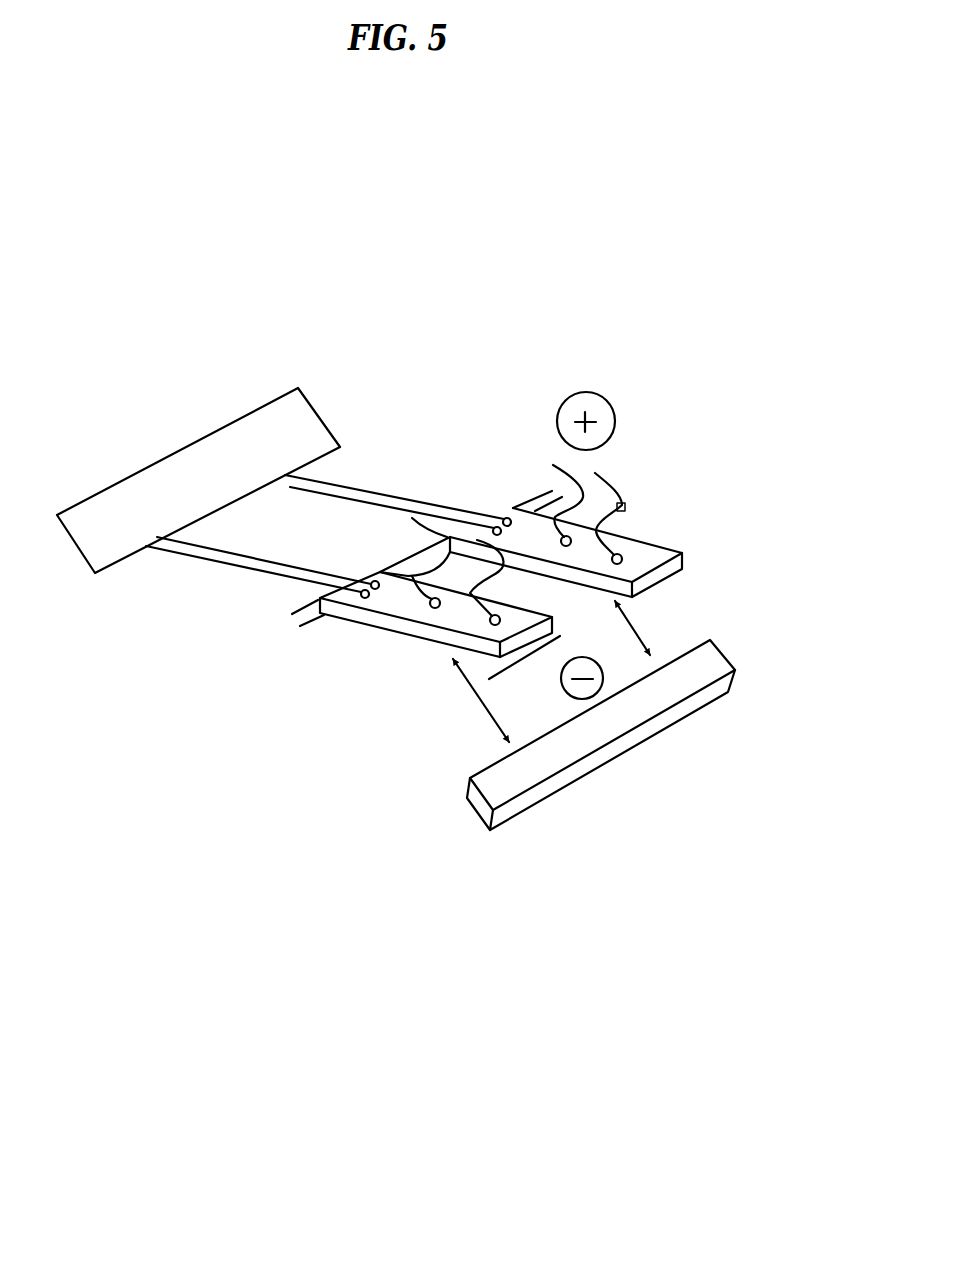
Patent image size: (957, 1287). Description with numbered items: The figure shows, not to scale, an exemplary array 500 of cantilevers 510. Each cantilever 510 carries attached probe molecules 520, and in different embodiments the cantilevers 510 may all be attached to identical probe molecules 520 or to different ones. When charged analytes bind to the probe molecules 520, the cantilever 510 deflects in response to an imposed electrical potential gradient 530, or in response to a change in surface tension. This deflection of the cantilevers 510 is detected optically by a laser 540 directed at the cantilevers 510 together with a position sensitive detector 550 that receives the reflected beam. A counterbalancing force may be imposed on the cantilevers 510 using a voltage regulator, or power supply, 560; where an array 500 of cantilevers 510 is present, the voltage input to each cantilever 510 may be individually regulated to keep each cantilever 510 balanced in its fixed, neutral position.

The array 500 is at (463, 1203).
The cantilever 510 is at (407, 602).
The probe molecules 520 is at (625, 508).
The electrical potential gradient 530 is at (612, 407).
The laser 540 is at (457, 653).
The position sensitive detector 550 is at (601, 746).
The voltage regulator (power supply) 560 is at (198, 480).